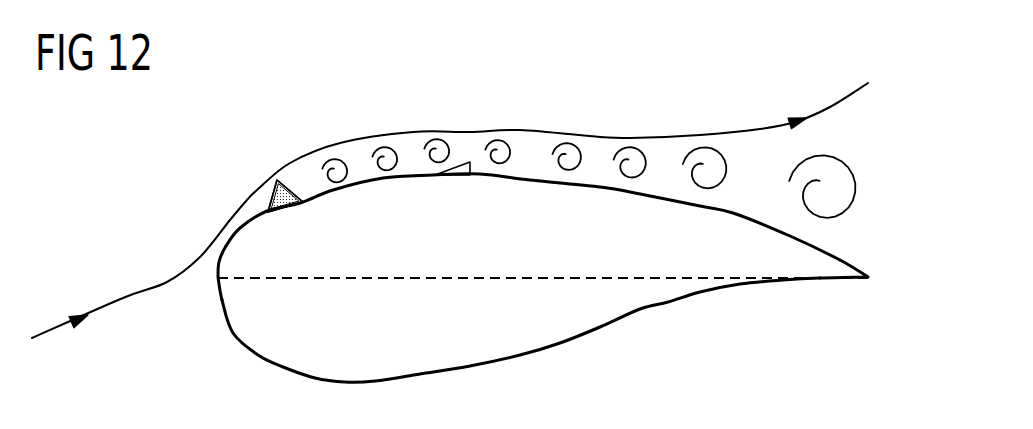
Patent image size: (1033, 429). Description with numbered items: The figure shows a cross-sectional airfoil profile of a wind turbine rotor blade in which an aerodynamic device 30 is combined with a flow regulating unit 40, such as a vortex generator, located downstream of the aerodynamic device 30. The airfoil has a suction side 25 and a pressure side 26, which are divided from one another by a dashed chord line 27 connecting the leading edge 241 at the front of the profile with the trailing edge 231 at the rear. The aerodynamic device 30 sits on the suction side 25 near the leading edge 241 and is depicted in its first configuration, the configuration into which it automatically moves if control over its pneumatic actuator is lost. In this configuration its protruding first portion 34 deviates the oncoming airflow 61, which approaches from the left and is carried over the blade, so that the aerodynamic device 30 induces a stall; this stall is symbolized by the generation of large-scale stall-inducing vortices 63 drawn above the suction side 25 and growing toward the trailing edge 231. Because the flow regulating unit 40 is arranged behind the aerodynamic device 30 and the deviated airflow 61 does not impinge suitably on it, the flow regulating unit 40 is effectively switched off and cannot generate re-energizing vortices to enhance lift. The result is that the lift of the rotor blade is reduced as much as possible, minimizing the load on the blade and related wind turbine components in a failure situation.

The suction side 25 is at (725, 212).
The pressure side 26 is at (668, 302).
The chord line 27 is at (433, 280).
The aerodynamic device 30 is at (308, 217).
The first portion 34 is at (274, 183).
The flow regulating unit 40 is at (460, 180).
The airflow 61 is at (122, 298).
The stall-inducing vortices 63 is at (342, 157).
The trailing edge 231 is at (870, 279).
The leading edge 241 is at (217, 278).